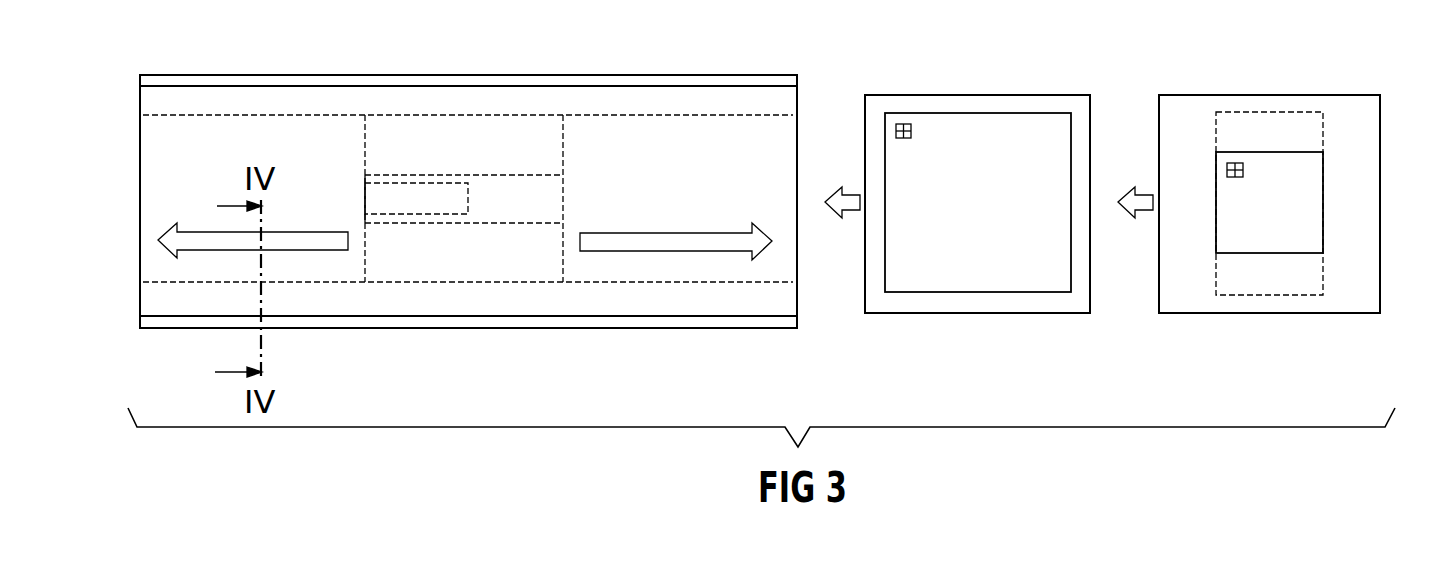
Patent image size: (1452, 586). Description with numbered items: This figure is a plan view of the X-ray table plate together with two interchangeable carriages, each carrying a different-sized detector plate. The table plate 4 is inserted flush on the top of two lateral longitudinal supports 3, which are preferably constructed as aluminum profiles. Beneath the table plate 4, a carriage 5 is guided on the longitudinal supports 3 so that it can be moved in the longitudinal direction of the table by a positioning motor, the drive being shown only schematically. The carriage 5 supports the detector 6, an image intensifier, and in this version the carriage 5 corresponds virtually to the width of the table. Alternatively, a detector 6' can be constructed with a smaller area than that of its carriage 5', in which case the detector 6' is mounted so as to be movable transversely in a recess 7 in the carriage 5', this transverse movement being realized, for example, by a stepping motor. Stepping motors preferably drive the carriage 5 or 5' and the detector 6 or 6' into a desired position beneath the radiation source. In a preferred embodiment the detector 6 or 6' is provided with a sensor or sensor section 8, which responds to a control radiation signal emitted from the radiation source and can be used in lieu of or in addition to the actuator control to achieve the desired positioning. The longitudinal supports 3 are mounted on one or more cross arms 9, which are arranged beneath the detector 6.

The longitudinal support 3 is at (605, 77).
The table plate 4 is at (655, 102).
The carriage 5 is at (977, 182).
The carriage 5' is at (1269, 181).
The detector 6 is at (978, 171).
The detector 6' is at (1324, 202).
The recess 7 is at (1324, 140).
The sensor 8 is at (905, 123).
The cross arm 9 is at (485, 266).